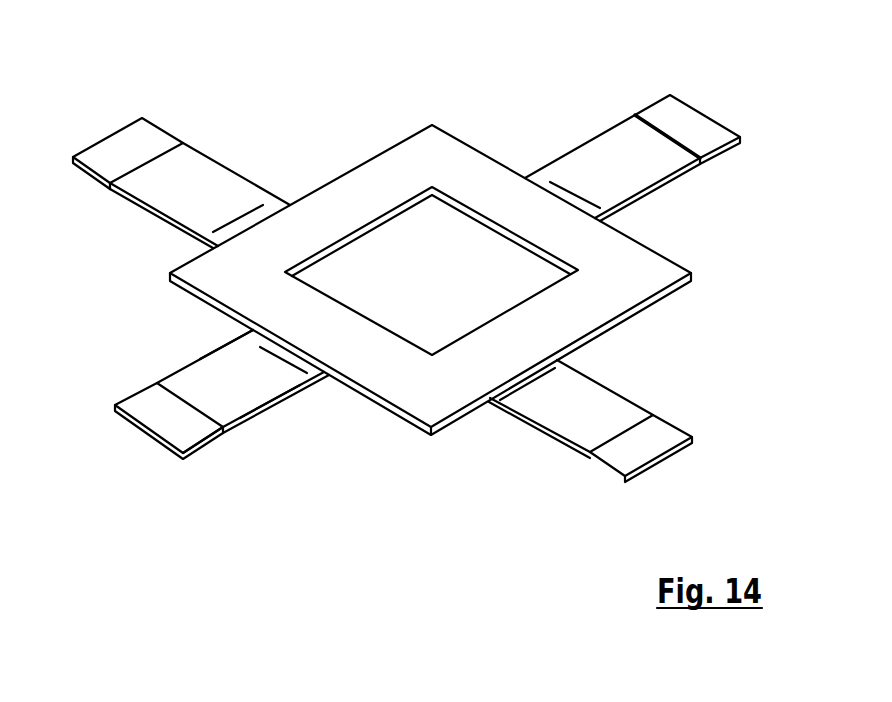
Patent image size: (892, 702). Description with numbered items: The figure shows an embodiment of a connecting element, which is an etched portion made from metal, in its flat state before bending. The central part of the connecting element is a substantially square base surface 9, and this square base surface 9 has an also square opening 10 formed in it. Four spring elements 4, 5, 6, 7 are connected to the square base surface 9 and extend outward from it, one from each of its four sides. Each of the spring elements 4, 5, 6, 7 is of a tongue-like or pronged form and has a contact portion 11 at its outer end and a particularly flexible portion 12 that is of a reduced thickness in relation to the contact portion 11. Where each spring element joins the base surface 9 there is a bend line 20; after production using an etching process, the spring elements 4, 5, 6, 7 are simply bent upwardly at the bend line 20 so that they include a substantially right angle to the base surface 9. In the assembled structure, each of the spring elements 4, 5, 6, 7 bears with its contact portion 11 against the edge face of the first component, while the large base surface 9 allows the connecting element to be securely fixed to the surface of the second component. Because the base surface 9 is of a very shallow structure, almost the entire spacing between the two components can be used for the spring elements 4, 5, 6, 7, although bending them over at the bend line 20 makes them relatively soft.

The spring element 4 is at (618, 392).
The spring element 5 is at (157, 440).
The spring element 6 is at (692, 127).
The spring element 7 is at (107, 133).
The base surface 9 is at (655, 252).
The opening 10 is at (431, 271).
The contact portion 11 is at (200, 458).
The flexible portion 12 is at (273, 407).
The bend line 20 is at (257, 342).